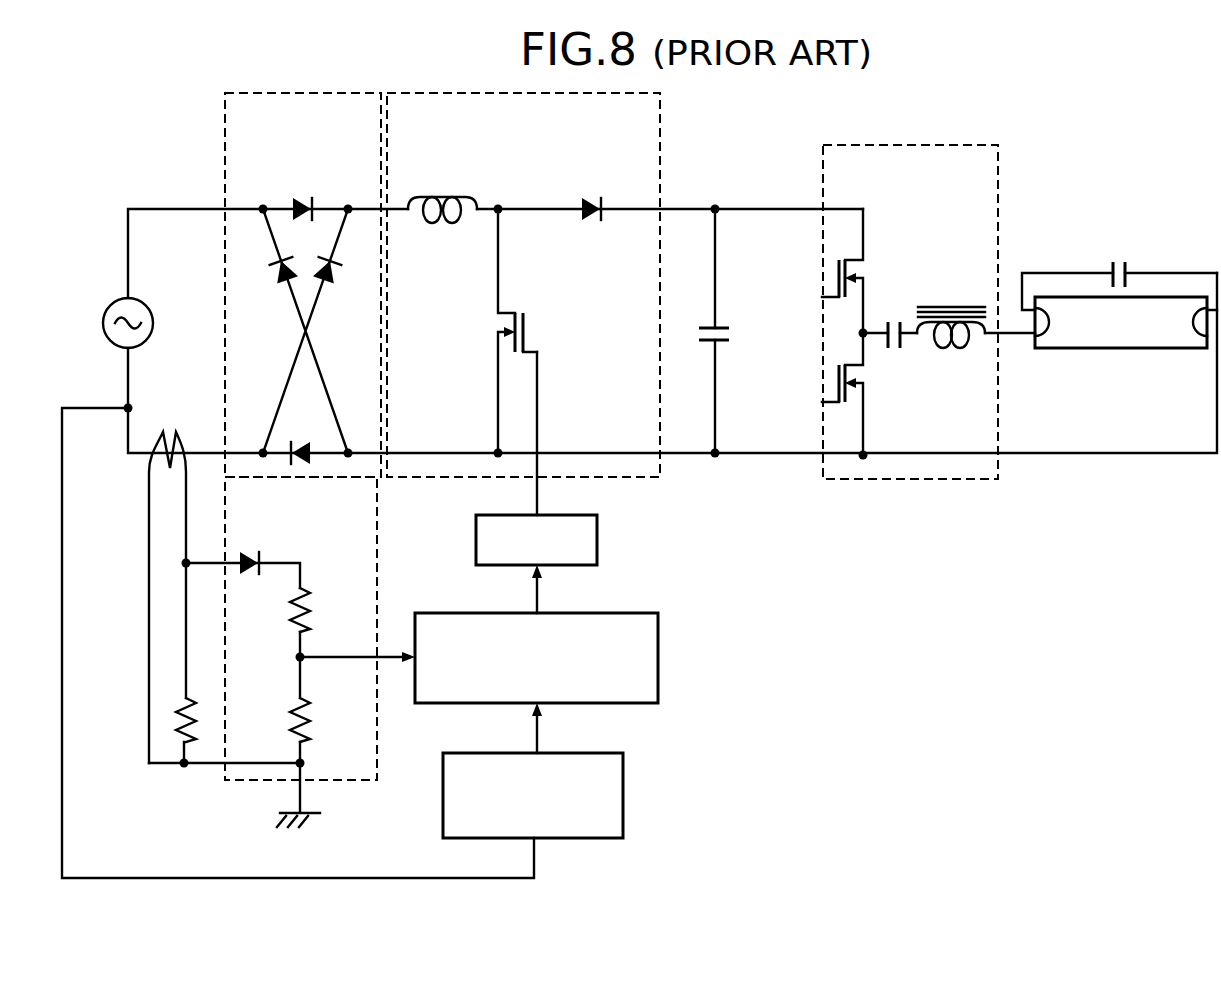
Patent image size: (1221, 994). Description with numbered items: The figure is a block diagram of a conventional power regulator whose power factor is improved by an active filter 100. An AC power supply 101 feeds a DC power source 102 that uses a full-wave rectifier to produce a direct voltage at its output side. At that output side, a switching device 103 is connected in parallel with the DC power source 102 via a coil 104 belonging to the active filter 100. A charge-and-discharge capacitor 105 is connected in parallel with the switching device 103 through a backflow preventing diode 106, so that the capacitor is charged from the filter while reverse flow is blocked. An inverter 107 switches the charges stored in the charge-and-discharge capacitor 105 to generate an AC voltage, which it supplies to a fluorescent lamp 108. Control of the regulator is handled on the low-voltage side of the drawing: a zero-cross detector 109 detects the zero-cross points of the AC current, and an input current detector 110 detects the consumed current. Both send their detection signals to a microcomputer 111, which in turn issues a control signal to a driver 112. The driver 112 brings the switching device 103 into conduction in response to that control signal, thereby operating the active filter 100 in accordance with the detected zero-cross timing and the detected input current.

The active filter 100 is at (665, 143).
The AC power supply 101 is at (112, 301).
The DC power source 102 is at (226, 145).
The switching device 103 is at (537, 330).
The coil 104 is at (441, 225).
The charge-and-discharge capacitor 105 is at (730, 340).
The backflow preventing diode 106 is at (590, 225).
The inverter 107 is at (1002, 178).
The fluorescent lamp 108 is at (1135, 350).
The zero-cross detector 109 is at (626, 796).
The input current detector 110 is at (353, 781).
The microcomputer 111 is at (660, 665).
The driver 112 is at (599, 545).